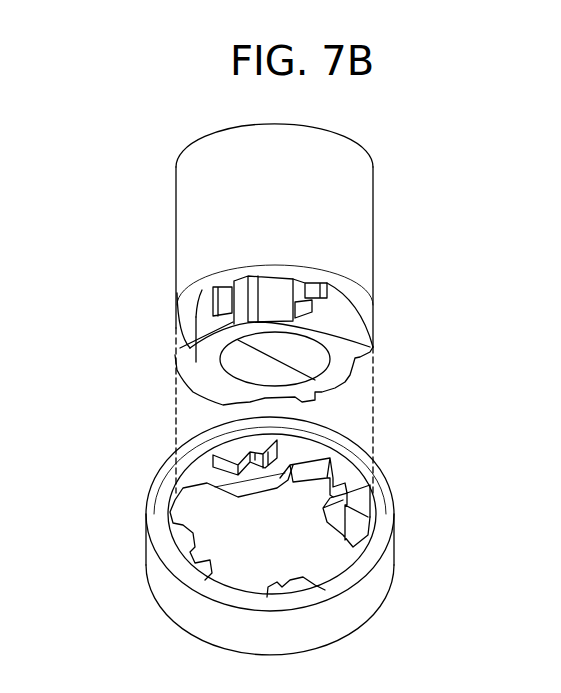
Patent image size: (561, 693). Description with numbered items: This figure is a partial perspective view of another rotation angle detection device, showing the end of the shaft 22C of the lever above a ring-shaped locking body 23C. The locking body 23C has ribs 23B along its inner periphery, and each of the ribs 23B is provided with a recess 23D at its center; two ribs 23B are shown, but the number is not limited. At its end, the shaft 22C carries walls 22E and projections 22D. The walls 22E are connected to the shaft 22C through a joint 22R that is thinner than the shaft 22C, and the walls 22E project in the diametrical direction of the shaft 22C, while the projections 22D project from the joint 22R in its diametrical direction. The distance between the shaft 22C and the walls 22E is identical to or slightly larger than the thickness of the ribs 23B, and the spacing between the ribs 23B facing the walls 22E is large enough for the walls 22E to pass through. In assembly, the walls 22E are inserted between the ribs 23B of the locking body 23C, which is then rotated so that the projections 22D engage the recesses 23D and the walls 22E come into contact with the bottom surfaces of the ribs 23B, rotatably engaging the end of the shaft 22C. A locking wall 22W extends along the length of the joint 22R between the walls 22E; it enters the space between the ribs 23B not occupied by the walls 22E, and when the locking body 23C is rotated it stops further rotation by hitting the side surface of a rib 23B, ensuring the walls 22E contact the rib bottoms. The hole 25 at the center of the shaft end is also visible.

The shaft 22C is at (185, 217).
The joint 22R is at (286, 298).
The projections 22D is at (213, 298).
The walls 22E is at (352, 318).
The locking wall 22W is at (238, 318).
The hole 25 is at (312, 362).
The recess 23D is at (355, 487).
The locking body 23C is at (165, 493).
The ribs 23B is at (363, 503).